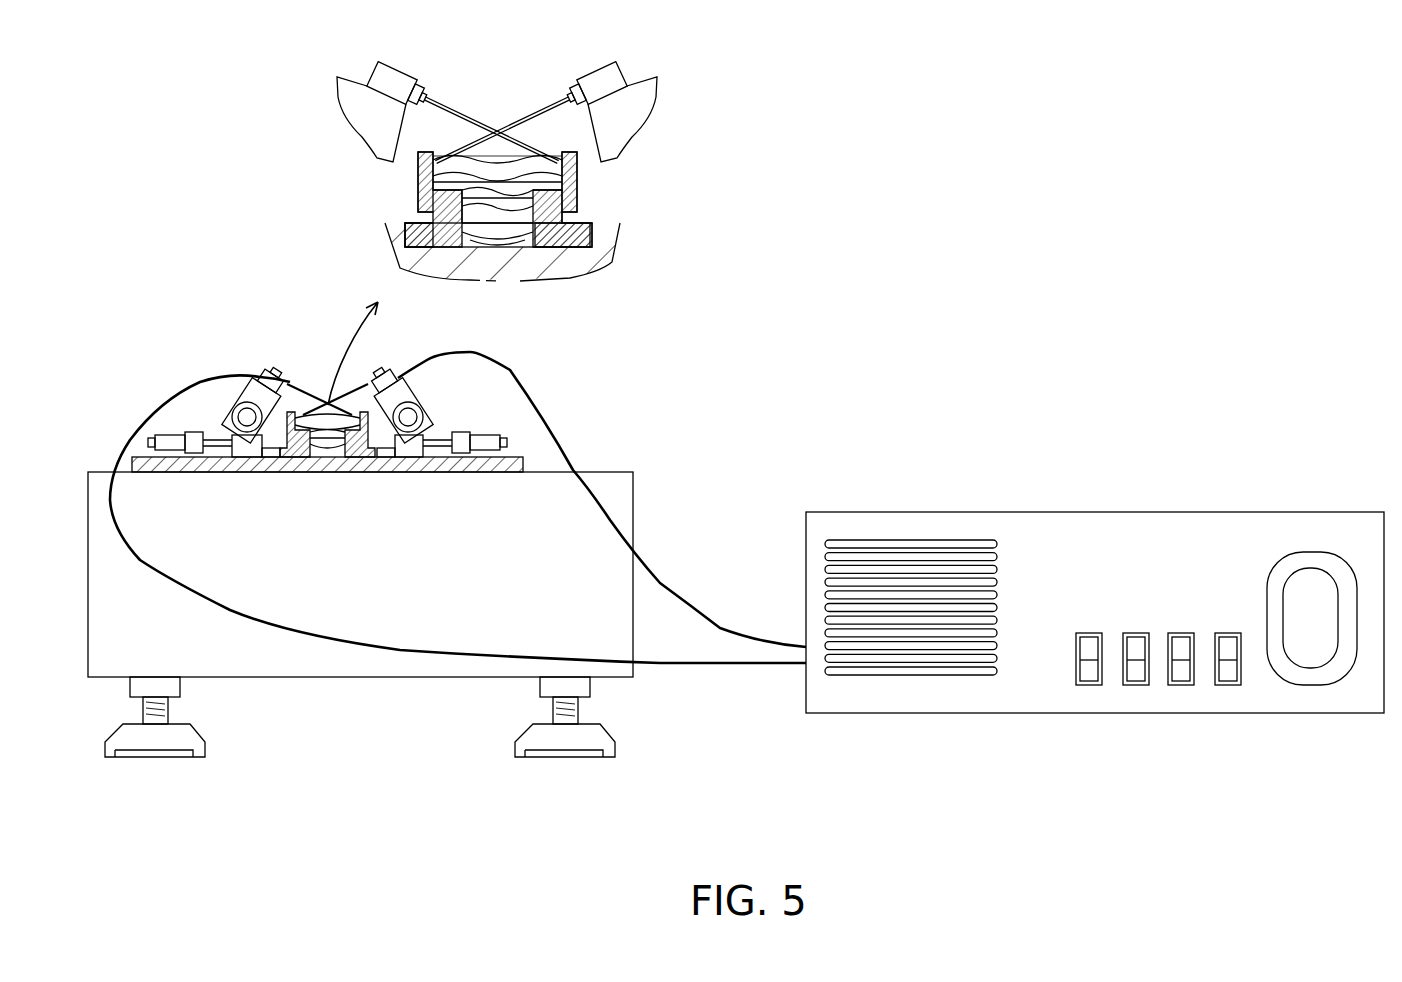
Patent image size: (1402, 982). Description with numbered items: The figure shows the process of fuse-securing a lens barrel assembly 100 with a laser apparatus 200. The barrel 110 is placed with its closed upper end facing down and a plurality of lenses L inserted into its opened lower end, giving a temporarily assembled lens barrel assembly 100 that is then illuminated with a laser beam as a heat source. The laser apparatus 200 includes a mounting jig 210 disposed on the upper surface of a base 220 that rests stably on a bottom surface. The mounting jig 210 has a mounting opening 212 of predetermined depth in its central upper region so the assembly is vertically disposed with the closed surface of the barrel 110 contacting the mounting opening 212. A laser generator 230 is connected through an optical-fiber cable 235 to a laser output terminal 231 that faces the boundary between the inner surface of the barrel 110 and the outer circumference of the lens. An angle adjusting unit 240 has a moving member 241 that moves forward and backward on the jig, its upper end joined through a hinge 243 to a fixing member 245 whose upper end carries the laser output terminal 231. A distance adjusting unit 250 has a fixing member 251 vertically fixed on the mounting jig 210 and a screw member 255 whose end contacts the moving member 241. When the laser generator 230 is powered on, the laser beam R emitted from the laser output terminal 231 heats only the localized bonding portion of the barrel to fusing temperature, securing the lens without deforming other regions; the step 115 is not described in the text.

The lens barrel assembly 100 is at (306, 118).
The barrel 110 is at (420, 172).
The barrel step 115 is at (420, 190).
The lens L is at (578, 184).
The laser beam R is at (527, 121).
The laser apparatus 200 is at (187, 263).
The mounting jig 210 is at (607, 265).
The mounting opening 212 is at (570, 254).
The base 220 is at (267, 663).
The laser generator 230 is at (1017, 700).
The laser output terminal 231 is at (377, 77).
The optical-fiber cable 235 is at (703, 623).
The angle adjusting unit 240 is at (208, 363).
The moving member 241 is at (205, 412).
The hinge 243 is at (233, 400).
The fixing member 245 is at (260, 383).
The distance adjusting unit 250 is at (448, 388).
The fixing member 251 is at (458, 437).
The screw member 255 is at (483, 440).